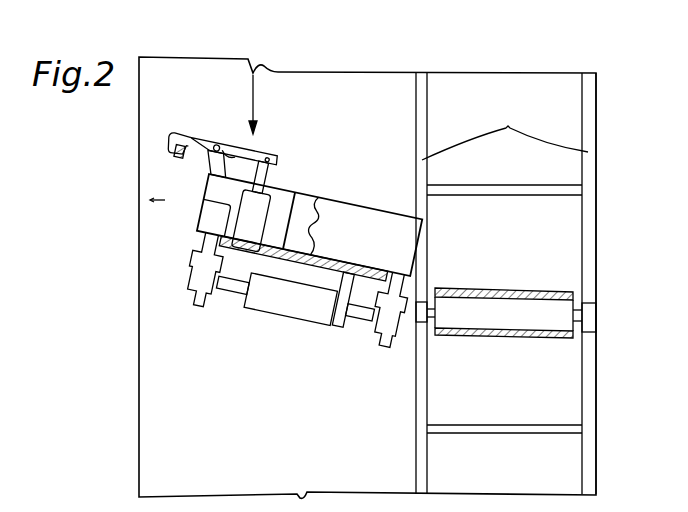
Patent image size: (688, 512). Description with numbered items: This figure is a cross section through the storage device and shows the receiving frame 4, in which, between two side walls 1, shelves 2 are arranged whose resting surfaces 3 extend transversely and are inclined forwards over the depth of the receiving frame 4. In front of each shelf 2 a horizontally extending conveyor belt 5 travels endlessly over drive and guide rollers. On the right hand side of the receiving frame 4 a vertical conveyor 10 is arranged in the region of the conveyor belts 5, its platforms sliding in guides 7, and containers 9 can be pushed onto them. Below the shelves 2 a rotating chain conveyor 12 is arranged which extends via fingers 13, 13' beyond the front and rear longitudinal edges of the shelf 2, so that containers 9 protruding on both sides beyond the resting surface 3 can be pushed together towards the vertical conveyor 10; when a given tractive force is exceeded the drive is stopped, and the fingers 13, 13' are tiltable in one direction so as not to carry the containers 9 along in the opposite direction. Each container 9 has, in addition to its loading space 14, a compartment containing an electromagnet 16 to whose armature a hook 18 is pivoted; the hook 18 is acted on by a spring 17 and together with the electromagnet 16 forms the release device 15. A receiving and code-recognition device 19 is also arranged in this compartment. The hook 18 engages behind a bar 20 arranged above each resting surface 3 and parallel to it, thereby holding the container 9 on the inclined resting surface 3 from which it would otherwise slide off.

The side wall 1 is at (303, 130).
The shelf 2 is at (287, 264).
The resting surface 3 is at (337, 242).
The receiving frame 4 is at (609, 160).
The conveyor belt 5 is at (566, 329).
The guides 7 is at (508, 127).
The container 9 is at (377, 240).
The vertical conveyor 10 is at (531, 86).
The chain conveyor 12 is at (210, 300).
The finger 13 is at (389, 338).
The finger 13' is at (149, 270).
The loading space 14 is at (312, 195).
The release device 15 is at (253, 72).
The electromagnet 16 is at (224, 306).
The spring 17 is at (228, 138).
The hook 18 is at (175, 141).
The receiving and code-recognition device 19 is at (212, 222).
The bar 20 is at (178, 164).